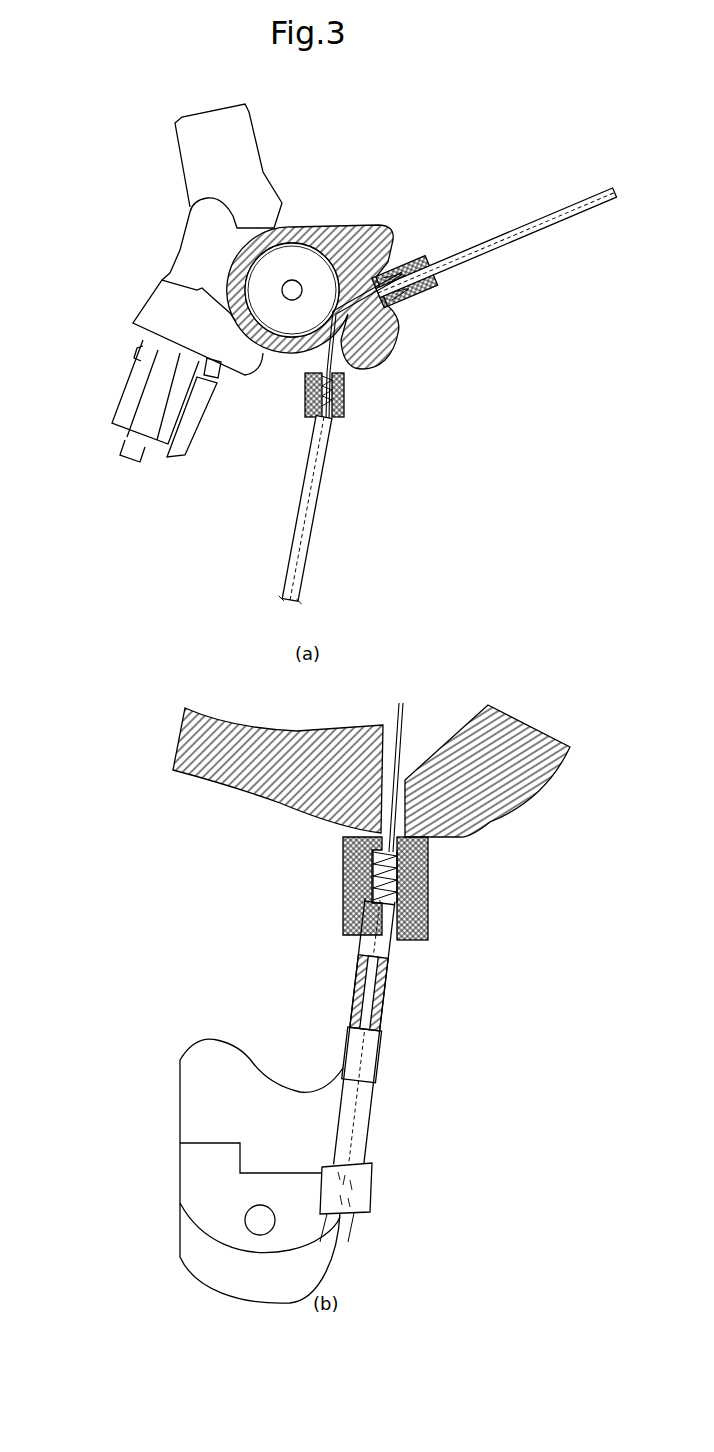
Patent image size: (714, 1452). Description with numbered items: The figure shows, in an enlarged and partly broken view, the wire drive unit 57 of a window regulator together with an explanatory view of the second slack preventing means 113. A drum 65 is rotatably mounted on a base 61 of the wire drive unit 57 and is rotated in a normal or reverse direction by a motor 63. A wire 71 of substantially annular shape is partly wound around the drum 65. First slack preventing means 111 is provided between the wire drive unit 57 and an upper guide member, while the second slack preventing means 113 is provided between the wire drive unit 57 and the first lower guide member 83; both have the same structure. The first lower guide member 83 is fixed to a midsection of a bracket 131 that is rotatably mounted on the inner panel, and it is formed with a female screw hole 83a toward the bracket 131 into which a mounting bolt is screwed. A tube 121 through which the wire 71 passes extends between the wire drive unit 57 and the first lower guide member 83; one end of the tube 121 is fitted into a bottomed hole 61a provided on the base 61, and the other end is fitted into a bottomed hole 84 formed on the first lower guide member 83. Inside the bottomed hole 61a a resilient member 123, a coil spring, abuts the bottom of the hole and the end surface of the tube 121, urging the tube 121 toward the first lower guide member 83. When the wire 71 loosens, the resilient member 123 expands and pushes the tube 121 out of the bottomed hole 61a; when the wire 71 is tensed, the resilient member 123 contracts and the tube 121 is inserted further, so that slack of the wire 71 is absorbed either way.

The wire drive unit 57 is at (385, 376).
The base 61 is at (346, 225).
The bottomed hole 61a is at (428, 856).
The motor 63 is at (158, 433).
The drum 65 is at (320, 225).
The wire 71 is at (340, 344).
The first lower guide member 83 is at (305, 1232).
The female screw hole 83a is at (243, 1223).
The bottomed hole 84 is at (372, 1190).
The first slack preventing means 111 is at (534, 214).
The second slack preventing means 113 is at (329, 501).
The tube 121 is at (387, 1055).
The resilient member 123 is at (428, 882).
The bracket 131 is at (225, 1093).